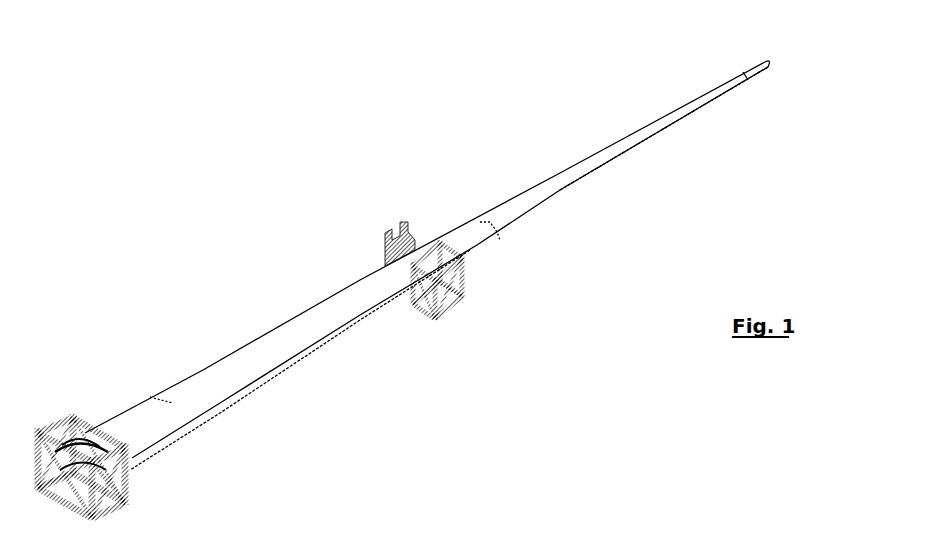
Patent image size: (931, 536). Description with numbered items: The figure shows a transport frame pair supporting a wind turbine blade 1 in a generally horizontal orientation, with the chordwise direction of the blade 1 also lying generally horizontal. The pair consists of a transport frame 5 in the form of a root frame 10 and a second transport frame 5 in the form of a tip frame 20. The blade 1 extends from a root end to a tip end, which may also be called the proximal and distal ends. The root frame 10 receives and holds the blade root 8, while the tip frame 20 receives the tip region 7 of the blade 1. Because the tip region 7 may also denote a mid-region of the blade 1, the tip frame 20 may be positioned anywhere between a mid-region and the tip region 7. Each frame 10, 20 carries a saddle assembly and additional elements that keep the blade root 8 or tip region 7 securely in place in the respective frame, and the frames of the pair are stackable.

The wind turbine blade 1 is at (198, 294).
The transport frame 5 is at (330, 450).
The tip region 7 is at (545, 203).
The blade root 8 is at (103, 382).
The root frame 10 is at (58, 408).
The tip frame 20 is at (410, 206).